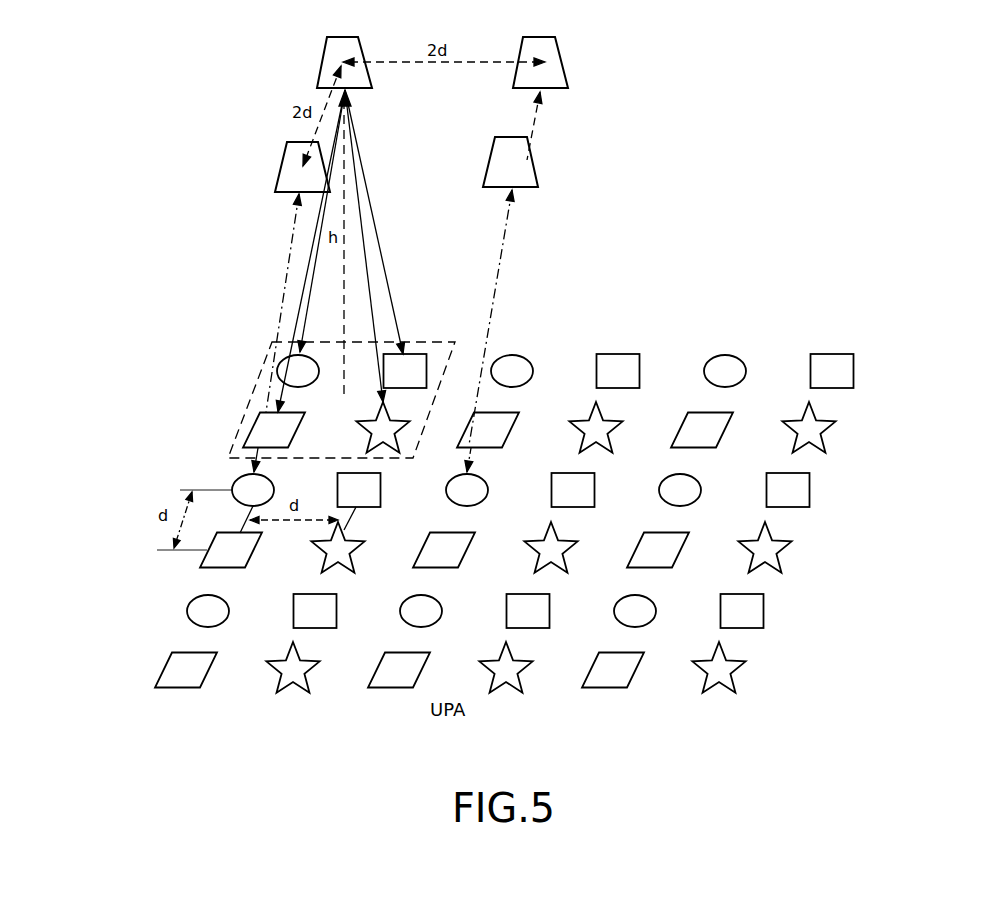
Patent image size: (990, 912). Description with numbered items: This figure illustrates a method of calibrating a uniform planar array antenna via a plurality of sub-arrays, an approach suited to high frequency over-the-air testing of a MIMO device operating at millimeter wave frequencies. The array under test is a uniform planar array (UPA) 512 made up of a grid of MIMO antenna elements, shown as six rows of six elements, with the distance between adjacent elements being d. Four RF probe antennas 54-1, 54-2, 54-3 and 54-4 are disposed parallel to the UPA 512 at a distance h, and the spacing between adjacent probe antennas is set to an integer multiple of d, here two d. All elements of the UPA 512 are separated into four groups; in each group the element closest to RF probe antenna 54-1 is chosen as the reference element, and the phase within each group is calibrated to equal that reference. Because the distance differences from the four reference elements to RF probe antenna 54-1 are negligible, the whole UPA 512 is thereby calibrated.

The RF probe antenna 54-1 is at (322, 62).
The RF probe antenna 54-2 is at (567, 69).
The RF probe antenna 54-3 is at (280, 172).
The RF probe antenna 54-4 is at (541, 172).
The uniform planar array (UPA) 512 is at (868, 347).